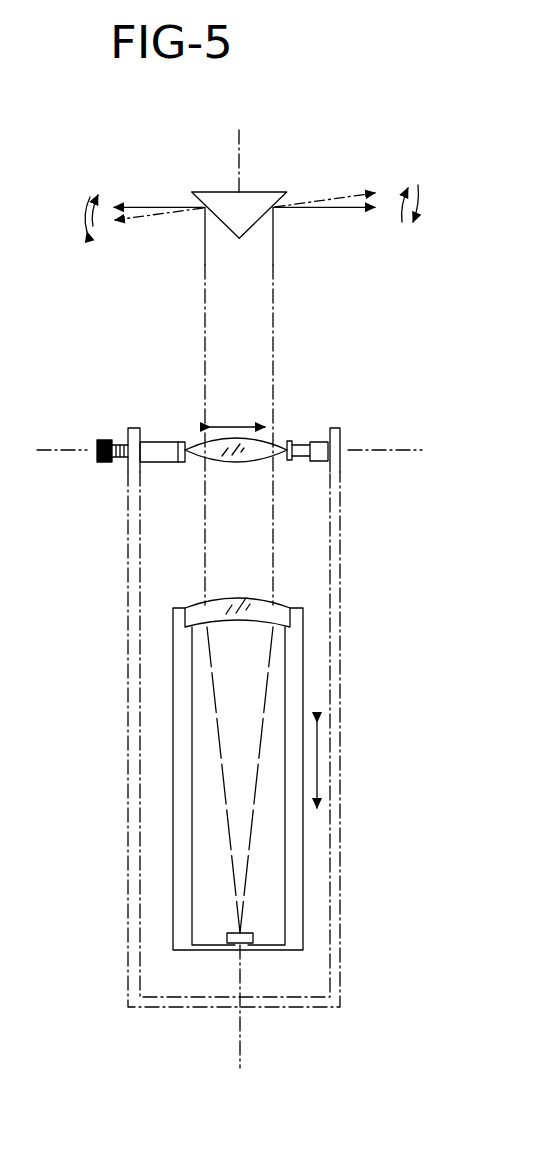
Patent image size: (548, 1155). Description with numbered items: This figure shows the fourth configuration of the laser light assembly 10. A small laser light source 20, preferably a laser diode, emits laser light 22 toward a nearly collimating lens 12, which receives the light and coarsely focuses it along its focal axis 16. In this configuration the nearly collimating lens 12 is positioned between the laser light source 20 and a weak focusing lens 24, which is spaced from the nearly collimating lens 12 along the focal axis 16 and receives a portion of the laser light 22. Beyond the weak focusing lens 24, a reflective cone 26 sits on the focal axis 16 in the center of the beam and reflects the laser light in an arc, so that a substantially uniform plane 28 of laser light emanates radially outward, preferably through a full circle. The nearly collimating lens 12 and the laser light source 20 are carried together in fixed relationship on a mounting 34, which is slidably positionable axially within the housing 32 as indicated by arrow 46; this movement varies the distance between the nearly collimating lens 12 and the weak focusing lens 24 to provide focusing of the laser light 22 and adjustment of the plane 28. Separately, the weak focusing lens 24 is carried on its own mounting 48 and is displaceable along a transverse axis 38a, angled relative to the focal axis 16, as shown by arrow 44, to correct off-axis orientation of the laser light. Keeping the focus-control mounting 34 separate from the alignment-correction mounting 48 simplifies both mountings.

The assembly 10 is at (114, 953).
The nearly collimating lens 12 is at (258, 605).
The focal axis 16 is at (244, 1048).
The laser light source 20 is at (240, 933).
The laser light 22 is at (272, 690).
The weak focusing lens 24 is at (263, 440).
The reflective cone 26 is at (257, 200).
The plane of laser light 28 is at (158, 205).
The housing 32 is at (130, 505).
The mounting 34 is at (180, 745).
The transverse axis 38a is at (80, 448).
The arrow 44 is at (237, 425).
The arrow 46 is at (320, 760).
The mounting 48 is at (190, 438).